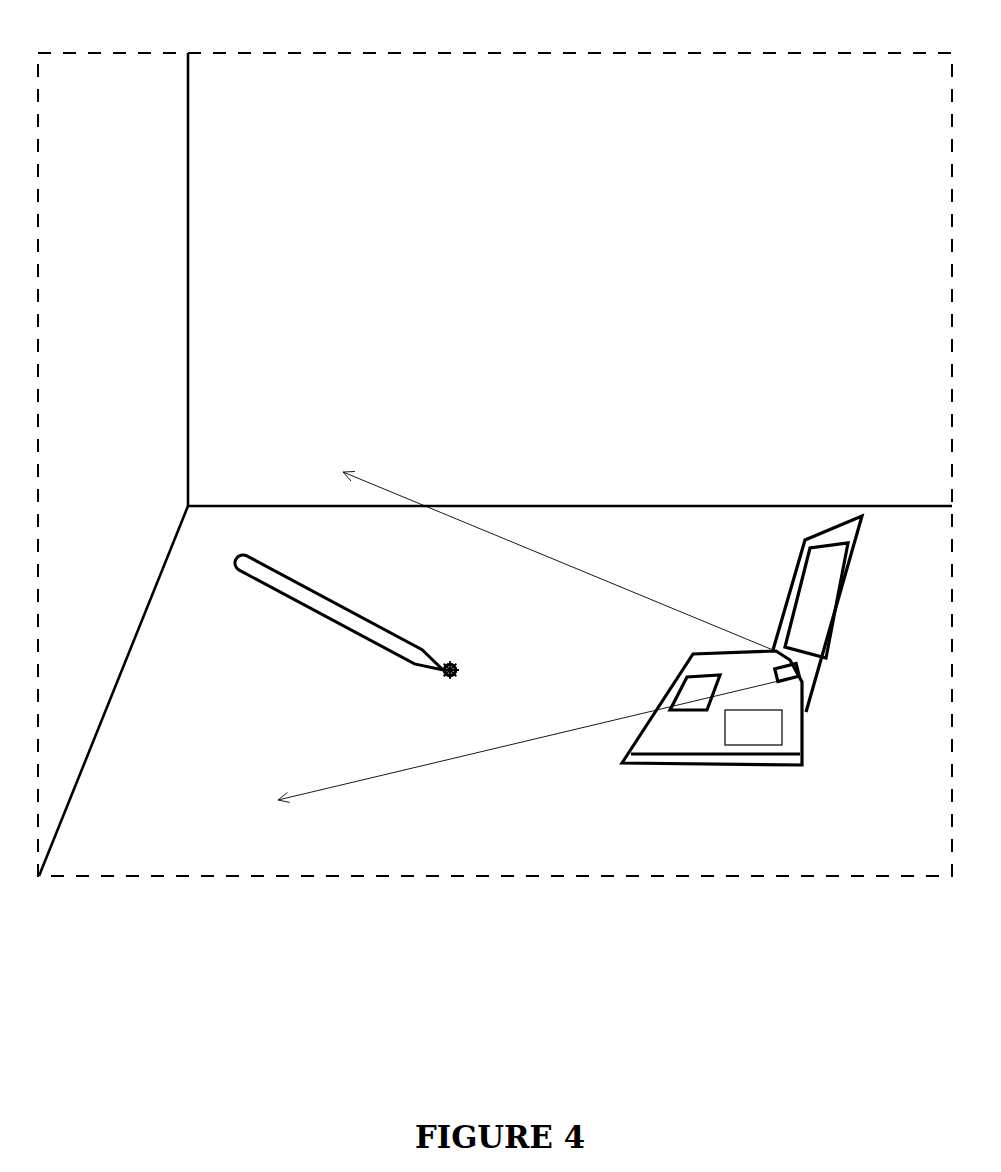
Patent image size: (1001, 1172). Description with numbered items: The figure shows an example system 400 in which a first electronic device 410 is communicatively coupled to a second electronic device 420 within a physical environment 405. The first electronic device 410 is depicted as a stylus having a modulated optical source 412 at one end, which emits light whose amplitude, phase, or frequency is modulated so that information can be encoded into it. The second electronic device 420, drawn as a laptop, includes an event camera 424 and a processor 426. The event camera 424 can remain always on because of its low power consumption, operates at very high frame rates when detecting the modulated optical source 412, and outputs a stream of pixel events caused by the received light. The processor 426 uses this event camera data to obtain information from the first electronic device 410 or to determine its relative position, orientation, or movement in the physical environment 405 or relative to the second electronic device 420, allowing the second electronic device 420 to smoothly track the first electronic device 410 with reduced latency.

The system 400 is at (190, 34).
The physical environment 405 is at (103, 124).
The first electronic device 410 is at (310, 584).
The modulated optical source 412 is at (444, 663).
The second electronic device 420 is at (857, 510).
The event camera 424 is at (803, 660).
The processor 426 is at (768, 738).